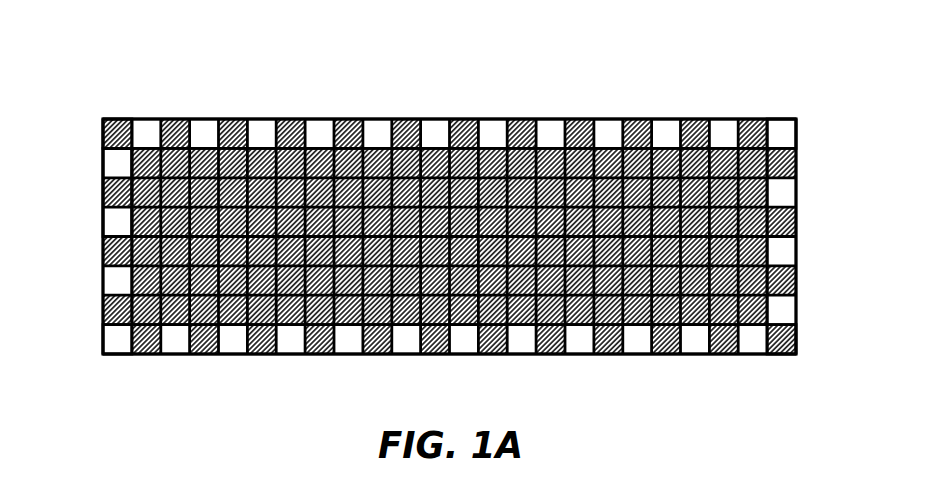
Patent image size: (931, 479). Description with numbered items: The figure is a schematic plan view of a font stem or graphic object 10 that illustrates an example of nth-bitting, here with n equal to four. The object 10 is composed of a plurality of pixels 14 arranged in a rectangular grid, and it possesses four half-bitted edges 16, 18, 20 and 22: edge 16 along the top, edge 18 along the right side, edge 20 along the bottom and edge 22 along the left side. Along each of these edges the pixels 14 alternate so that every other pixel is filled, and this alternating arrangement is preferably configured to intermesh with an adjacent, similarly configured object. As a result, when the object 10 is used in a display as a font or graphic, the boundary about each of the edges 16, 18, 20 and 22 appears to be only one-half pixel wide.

The object 10 is at (229, 49).
The pixels 14 is at (100, 210).
The half-bitted edge 16 is at (88, 142).
The half-bitted edge 18 is at (773, 82).
The half-bitted edge 20 is at (88, 347).
The half-bitted edge 22 is at (110, 85).